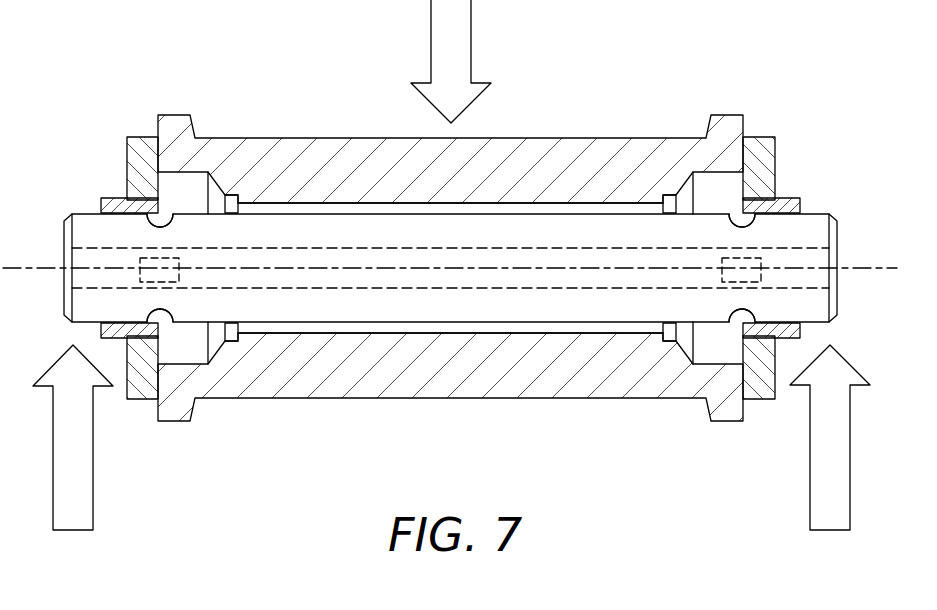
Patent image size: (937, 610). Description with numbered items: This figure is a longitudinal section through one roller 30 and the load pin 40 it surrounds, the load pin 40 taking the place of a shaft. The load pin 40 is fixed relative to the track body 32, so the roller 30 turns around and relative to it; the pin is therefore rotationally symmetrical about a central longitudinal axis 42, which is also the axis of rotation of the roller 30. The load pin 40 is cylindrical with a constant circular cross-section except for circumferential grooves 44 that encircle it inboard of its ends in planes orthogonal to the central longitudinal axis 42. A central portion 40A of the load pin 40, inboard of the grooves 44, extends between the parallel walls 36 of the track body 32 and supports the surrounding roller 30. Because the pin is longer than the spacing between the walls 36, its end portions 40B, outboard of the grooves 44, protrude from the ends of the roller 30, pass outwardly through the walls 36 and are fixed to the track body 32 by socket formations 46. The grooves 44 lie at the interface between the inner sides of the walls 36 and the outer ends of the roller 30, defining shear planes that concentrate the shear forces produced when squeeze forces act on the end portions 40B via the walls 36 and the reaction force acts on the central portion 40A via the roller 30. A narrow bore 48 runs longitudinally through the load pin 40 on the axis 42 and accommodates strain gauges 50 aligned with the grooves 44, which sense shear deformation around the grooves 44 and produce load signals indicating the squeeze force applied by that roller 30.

The roller 30 is at (298, 150).
The track body 32 is at (452, 244).
The parallel walls 36 is at (136, 146).
The load pin 40 is at (565, 167).
The central portion 40A is at (451, 226).
The end portions 40B is at (82, 233).
The central longitudinal axis 42 is at (870, 271).
The circumferential grooves 44 is at (160, 297).
The socket formations 46 is at (104, 205).
The narrow bore 48 is at (393, 290).
The strain gauges 50 is at (180, 263).